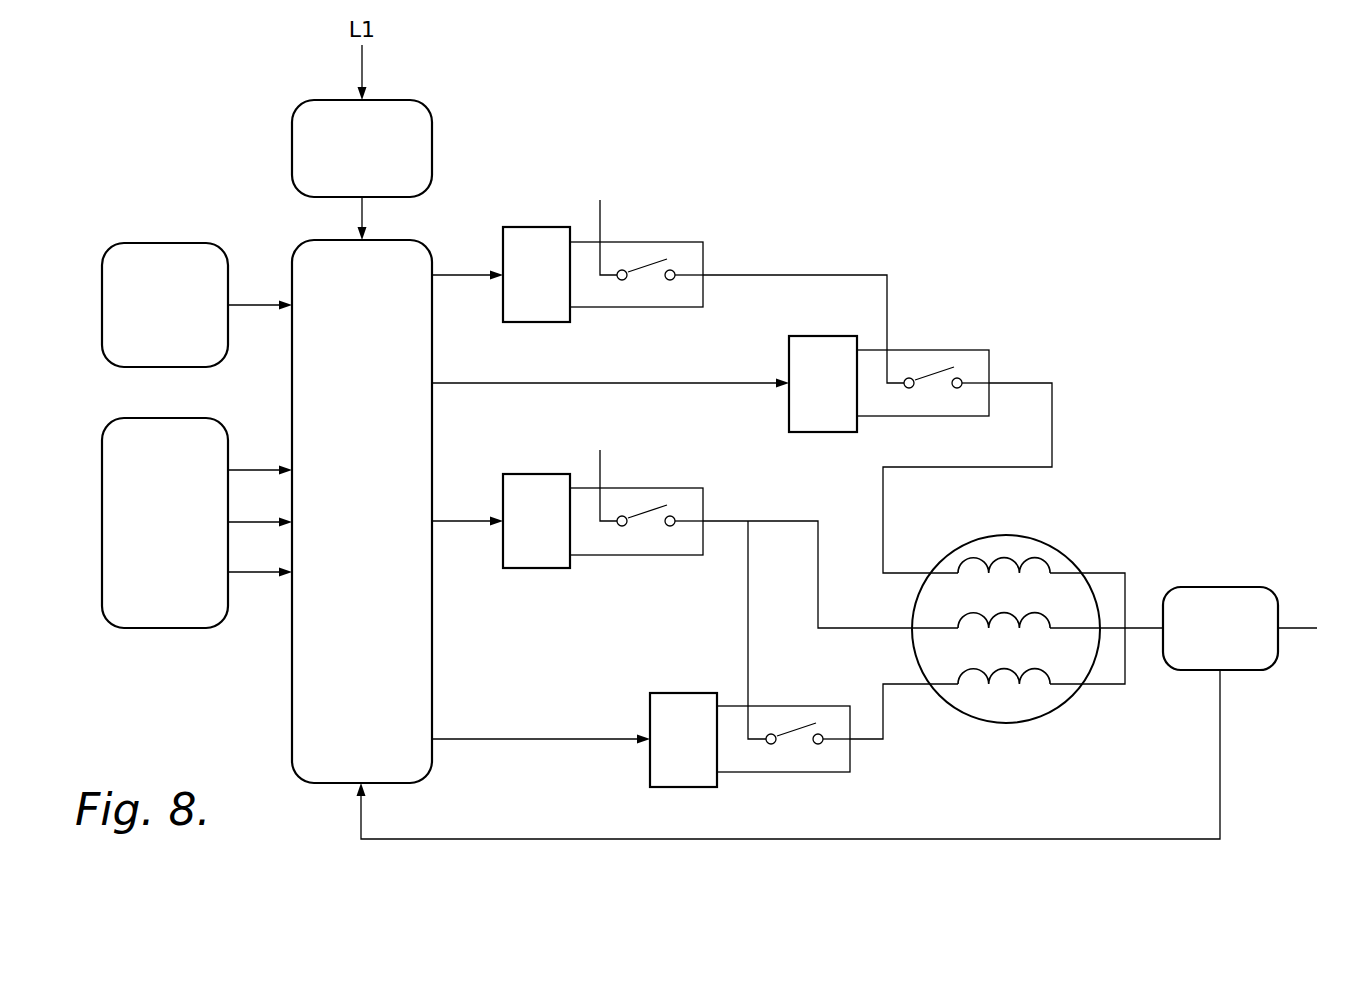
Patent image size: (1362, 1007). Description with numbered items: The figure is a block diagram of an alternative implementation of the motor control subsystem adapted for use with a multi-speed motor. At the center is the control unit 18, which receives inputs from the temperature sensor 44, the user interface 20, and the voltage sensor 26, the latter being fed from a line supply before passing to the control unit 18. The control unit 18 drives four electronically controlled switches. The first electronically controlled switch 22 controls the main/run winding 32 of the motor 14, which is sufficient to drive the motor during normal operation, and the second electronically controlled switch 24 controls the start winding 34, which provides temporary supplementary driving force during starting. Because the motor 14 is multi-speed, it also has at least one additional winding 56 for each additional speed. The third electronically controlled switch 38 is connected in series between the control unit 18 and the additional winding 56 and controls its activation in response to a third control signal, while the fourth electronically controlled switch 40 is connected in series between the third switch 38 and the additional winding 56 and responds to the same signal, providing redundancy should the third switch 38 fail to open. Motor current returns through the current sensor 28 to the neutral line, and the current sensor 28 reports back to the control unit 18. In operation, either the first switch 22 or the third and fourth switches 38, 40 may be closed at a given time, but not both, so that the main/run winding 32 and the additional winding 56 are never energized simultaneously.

The electric motor 14 is at (1006, 629).
The control unit 18 is at (308, 250).
The user interface 20 is at (126, 436).
The first electronically controlled switch 22 is at (538, 558).
The second electronically controlled switch 24 is at (672, 702).
The voltage sensor 26 is at (302, 118).
The current sensor 28 is at (1243, 592).
The main/run winding 32 is at (950, 612).
The start winding 34 is at (1040, 687).
The third electronically controlled switch 38 is at (538, 312).
The fourth electronically controlled switch 40 is at (803, 405).
The temperature sensor 44 is at (126, 263).
The additional winding 56 is at (993, 550).